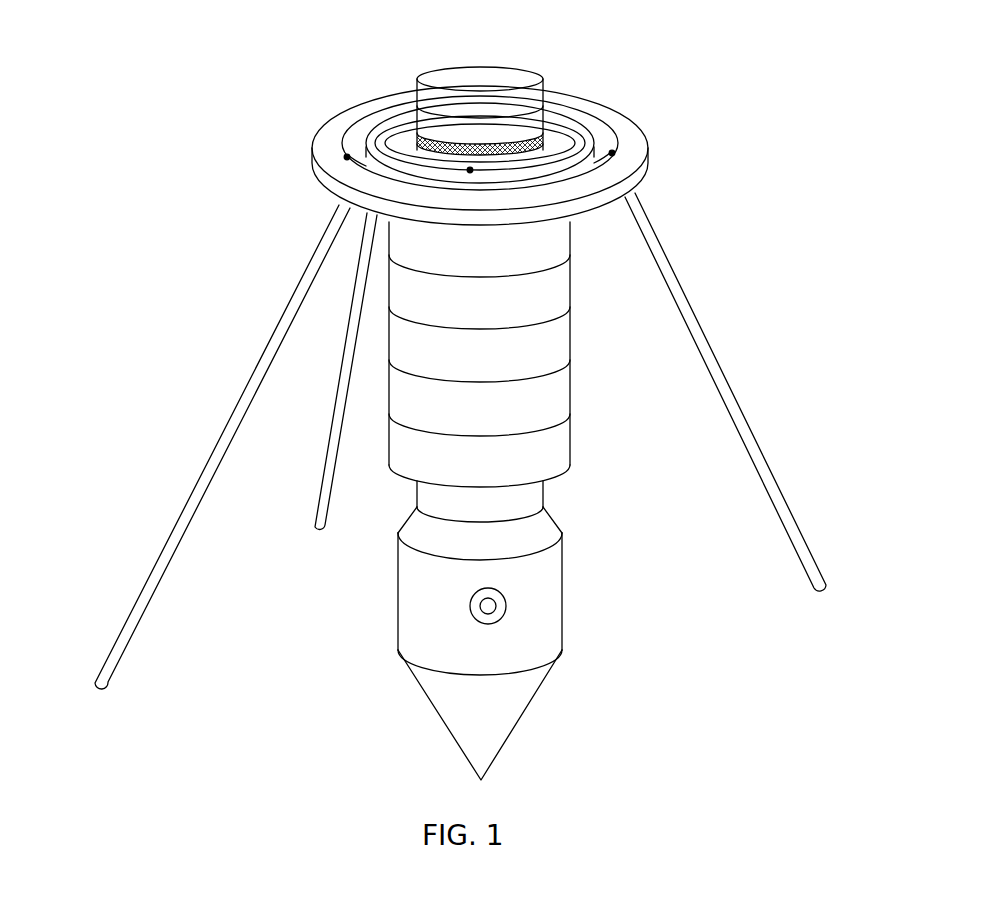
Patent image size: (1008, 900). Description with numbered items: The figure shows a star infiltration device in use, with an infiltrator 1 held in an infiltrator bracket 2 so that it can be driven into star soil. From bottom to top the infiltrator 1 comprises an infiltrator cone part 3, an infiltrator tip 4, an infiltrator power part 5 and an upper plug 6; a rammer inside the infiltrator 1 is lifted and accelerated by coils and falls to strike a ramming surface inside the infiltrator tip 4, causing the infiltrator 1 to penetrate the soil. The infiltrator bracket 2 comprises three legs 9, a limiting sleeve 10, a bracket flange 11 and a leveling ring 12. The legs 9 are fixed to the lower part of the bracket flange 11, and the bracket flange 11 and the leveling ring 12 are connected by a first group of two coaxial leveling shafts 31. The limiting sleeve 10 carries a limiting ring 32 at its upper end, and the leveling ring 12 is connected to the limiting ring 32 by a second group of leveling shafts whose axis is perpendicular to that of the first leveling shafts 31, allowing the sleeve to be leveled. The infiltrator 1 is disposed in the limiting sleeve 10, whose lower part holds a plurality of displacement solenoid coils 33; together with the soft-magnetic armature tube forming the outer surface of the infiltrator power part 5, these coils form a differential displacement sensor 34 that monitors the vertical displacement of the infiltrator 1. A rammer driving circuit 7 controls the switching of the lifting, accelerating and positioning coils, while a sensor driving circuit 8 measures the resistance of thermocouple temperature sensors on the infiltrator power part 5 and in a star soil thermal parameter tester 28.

The infiltrator 1 is at (492, 501).
The infiltrator bracket 2 is at (310, 251).
The infiltrator cone part 3 is at (450, 733).
The infiltrator tip 4 is at (432, 647).
The infiltrator power part 5 is at (422, 503).
The upper plug 6 is at (548, 143).
The rammer driving circuit 7 is at (533, 123).
The sensor driving circuit 8 is at (537, 97).
The legs 9 is at (265, 357).
The limiting sleeve 10 is at (570, 355).
The bracket flange 11 is at (337, 138).
The leveling ring 12 is at (365, 135).
The star soil thermal parameter tester 28 is at (505, 626).
The first group of leveling shafts 31 is at (345, 158).
The limiting ring 32 is at (408, 137).
The displacement solenoid coils 33 is at (558, 228).
The differential displacement sensor 34 is at (560, 478).